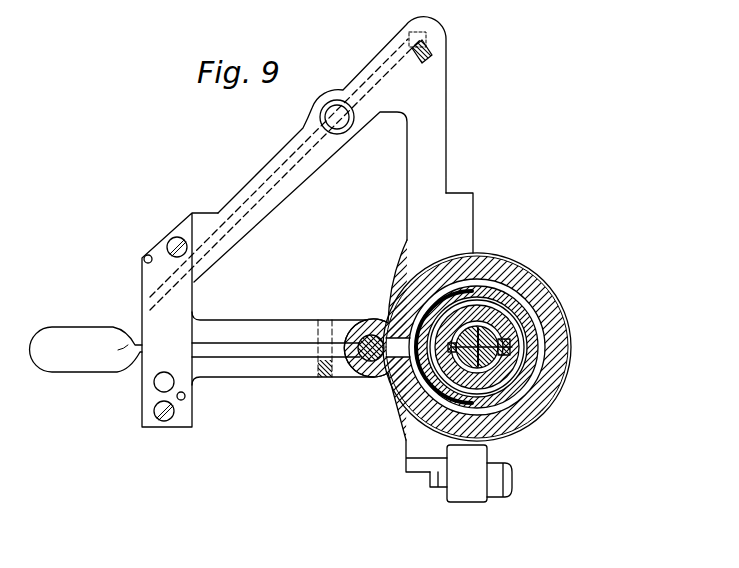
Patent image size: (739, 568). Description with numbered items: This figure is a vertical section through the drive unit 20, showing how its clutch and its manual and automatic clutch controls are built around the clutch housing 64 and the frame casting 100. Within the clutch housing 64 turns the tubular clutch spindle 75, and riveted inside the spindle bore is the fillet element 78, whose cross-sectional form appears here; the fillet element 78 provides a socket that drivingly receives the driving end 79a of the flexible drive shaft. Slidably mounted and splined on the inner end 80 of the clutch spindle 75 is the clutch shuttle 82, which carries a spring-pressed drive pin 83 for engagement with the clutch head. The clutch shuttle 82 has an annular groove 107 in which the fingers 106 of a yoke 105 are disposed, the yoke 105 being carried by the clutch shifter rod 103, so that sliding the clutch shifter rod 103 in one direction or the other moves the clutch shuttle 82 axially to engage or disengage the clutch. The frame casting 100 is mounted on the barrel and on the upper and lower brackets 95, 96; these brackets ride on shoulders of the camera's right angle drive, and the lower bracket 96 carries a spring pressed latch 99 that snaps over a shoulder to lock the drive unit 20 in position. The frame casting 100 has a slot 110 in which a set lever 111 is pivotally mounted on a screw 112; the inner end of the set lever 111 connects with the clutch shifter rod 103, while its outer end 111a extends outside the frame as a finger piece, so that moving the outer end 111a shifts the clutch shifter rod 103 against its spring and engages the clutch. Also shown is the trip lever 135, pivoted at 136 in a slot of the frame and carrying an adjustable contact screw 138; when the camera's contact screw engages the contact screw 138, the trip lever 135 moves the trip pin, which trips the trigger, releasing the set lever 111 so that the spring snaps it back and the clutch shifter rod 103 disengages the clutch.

The drive unit 20 is at (257, 174).
The clutch housing 64 is at (546, 308).
The clutch spindle 75 is at (492, 356).
The fillet element 78 is at (505, 330).
The driving end of the flexible drive shaft 79a is at (490, 388).
The inner end of clutch spindle 80 is at (508, 312).
The clutch shuttle 82 is at (473, 403).
The drive pin 83 is at (512, 346).
The upper bracket 95 is at (474, 228).
The lower bracket 96 is at (477, 458).
The spring pressed latch 99 is at (436, 487).
The frame casting 100 is at (270, 319).
The clutch shifter rod 103 is at (374, 379).
The yoke 105 is at (400, 404).
The fingers of the yoke 106 is at (482, 297).
The annular groove 107 is at (548, 288).
The slot 110 is at (234, 358).
The set lever 111 is at (269, 350).
The outer end of set lever 111a is at (60, 338).
The screw 112 is at (343, 299).
The trip lever 135 is at (378, 78).
The pivot of trip lever 136 is at (430, 18).
The adjustable contact screw 138 is at (340, 125).